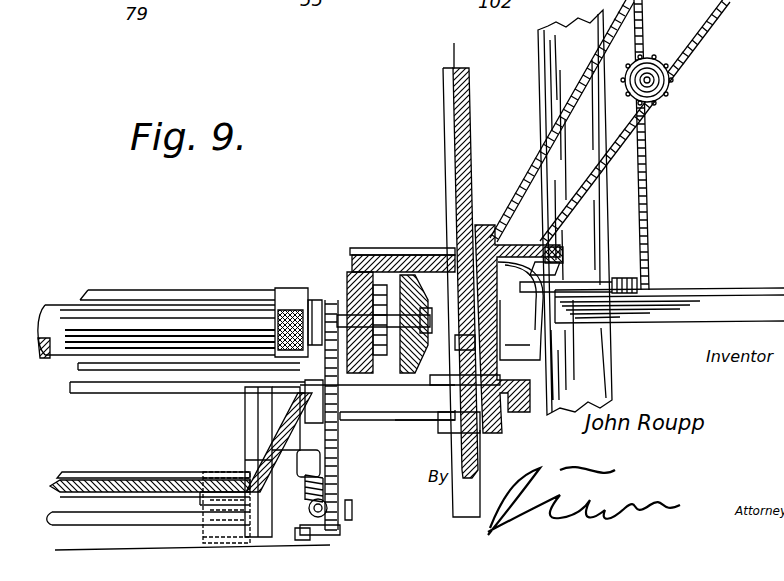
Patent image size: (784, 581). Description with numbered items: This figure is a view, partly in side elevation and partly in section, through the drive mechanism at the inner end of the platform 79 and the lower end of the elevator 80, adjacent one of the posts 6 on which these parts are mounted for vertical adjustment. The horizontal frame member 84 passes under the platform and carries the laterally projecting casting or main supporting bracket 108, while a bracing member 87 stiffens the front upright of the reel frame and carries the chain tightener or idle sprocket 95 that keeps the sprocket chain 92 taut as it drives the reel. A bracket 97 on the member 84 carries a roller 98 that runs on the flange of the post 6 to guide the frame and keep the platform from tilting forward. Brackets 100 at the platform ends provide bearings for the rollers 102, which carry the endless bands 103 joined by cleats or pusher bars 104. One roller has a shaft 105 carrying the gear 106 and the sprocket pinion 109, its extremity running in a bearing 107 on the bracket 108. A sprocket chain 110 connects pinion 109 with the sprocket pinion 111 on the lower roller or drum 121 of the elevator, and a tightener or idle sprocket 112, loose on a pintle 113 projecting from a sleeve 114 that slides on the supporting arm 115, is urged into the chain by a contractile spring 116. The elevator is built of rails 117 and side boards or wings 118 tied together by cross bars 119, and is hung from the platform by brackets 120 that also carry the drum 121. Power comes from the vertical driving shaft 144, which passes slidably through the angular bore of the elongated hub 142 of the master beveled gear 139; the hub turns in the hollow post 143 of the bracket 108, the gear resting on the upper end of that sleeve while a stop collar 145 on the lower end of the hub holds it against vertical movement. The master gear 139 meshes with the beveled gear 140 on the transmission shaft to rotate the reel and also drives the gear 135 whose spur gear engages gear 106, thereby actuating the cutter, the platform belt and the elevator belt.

The post 6 is at (562, 61).
The platform 79 is at (156, 312).
The elevator 80 is at (150, 474).
The horizontal member 84 is at (744, 292).
The bracing member 87 is at (646, 196).
The sprocket chain 92 is at (650, 122).
The chain tightener or idle sprocket 95 is at (668, 80).
The bracket 97 is at (602, 290).
The roller 98 is at (552, 266).
The bracket 100 is at (74, 394).
The roller 102 is at (222, 305).
The endless band 103 is at (288, 300).
The cleat or pusher bar 104 is at (200, 283).
The shaft 105 is at (368, 375).
The gear 106 is at (416, 376).
The bearing 107 is at (405, 421).
The main supporting bracket 108 is at (470, 378).
The sprocket pinion 109 is at (320, 303).
The sprocket chain 110 is at (340, 438).
The sprocket pinion 111 is at (342, 532).
The tightener or idle sprocket 112 is at (342, 462).
The pintle 113 is at (340, 484).
The sleeve 114 is at (252, 470).
The supporting arm 115 is at (268, 440).
The contractile spring 116 is at (300, 530).
The rail 117 is at (92, 466).
The side board or wing 118 is at (258, 408).
The cross bar 119 is at (150, 498).
The bracket 120 is at (272, 420).
The roller or drum 121 is at (210, 490).
The gear 135 is at (380, 262).
The master beveled gear 139 is at (423, 247).
The beveled gear 140 is at (542, 312).
The elongated hub 142 is at (462, 345).
The hollow post 143 is at (480, 228).
The vertical driving shaft 144 is at (470, 108).
The stop collar 145 is at (502, 430).